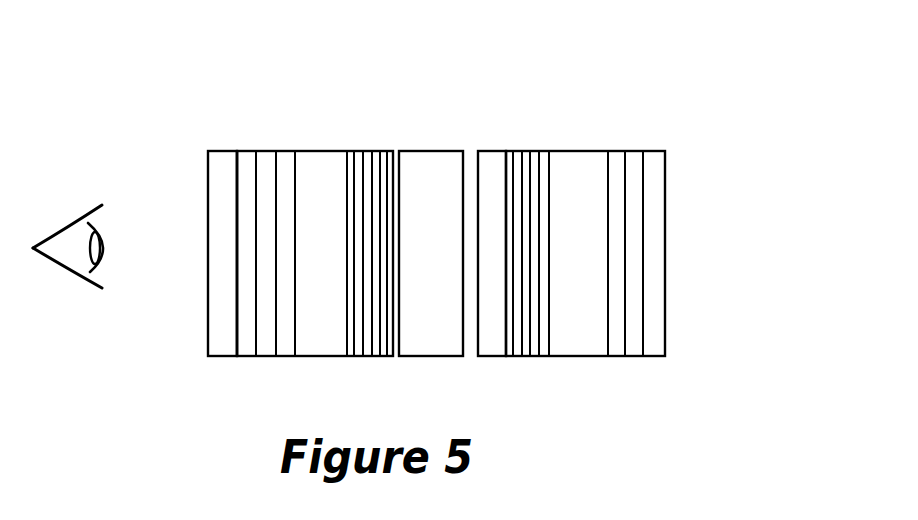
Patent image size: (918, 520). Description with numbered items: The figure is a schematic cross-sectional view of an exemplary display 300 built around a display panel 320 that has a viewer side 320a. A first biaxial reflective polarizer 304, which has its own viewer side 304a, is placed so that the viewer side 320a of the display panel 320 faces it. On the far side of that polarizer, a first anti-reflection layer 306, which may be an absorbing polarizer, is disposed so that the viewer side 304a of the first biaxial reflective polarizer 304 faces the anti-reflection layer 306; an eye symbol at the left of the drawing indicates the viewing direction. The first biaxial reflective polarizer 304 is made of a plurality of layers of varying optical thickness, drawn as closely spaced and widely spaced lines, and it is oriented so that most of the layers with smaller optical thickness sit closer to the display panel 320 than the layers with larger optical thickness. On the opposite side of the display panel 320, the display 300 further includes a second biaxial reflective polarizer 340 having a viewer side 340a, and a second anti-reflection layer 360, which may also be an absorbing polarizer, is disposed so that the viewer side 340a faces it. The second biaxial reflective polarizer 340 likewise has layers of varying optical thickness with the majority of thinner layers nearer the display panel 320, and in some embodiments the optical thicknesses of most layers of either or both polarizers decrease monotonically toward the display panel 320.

The display 300 is at (615, 62).
The first biaxial reflective polarizer 304 is at (393, 357).
The viewer side of the first biaxial reflective polarizer 304a is at (239, 188).
The first anti-reflection layer 306 is at (223, 151).
The display panel 320 is at (427, 151).
The viewer side of the display panel 320a is at (397, 188).
The second biaxial reflective polarizer 340 is at (665, 357).
The viewer side of the second biaxial reflective polarizer 340a is at (506, 190).
The second anti-reflection layer 360 is at (493, 151).